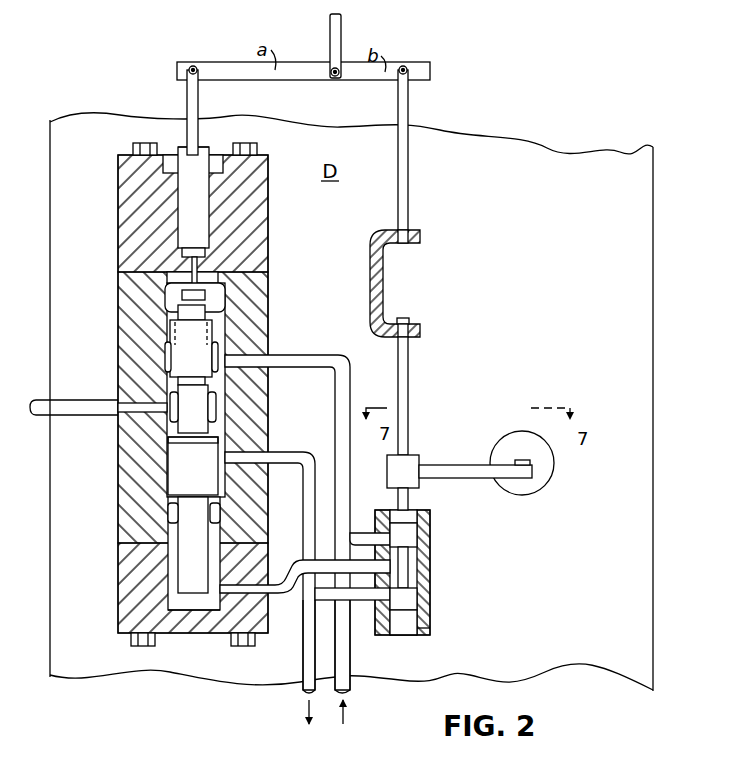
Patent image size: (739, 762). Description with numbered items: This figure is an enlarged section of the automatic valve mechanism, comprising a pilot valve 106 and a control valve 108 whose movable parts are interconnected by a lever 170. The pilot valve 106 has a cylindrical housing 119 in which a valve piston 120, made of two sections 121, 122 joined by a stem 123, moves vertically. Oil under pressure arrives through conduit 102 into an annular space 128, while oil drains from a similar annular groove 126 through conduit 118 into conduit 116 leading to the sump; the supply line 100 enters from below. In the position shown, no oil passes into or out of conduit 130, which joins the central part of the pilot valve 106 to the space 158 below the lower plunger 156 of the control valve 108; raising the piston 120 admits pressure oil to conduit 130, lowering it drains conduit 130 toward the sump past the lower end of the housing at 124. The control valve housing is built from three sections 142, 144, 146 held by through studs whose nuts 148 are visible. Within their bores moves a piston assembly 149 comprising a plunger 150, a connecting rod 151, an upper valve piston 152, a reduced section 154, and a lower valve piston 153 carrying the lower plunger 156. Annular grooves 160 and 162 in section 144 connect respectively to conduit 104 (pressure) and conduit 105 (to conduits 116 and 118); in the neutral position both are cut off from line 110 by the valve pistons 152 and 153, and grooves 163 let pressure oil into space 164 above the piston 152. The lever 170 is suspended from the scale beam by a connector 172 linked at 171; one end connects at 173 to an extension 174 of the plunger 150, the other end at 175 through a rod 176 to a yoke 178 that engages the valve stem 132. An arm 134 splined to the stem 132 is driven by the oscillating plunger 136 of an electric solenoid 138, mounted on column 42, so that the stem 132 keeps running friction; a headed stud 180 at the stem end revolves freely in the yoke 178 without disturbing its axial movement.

The column 42 is at (512, 233).
The inlet pipe 100 is at (349, 677).
The conduit 102 is at (358, 533).
The conduit 104 is at (310, 358).
The conduit 105 is at (296, 455).
The pilot valve 106 is at (433, 556).
The control valve 108 is at (116, 483).
The line 110 is at (80, 405).
The conduit 116 is at (305, 653).
The conduit 118 is at (363, 602).
The cylindrical housing 119 is at (420, 636).
The valve piston 120 is at (406, 511).
The section 121 is at (430, 520).
The section 122 is at (418, 624).
The stem 123 is at (408, 580).
The valve end plate 124 is at (431, 630).
The annular groove 126 is at (418, 604).
The annular space 128 is at (418, 535).
The conduit 130 is at (292, 577).
The valve stem 132 is at (408, 391).
The arm 134 is at (455, 467).
The oscillating plunger 136 is at (531, 466).
The electric solenoid 138 is at (507, 446).
The housing section 142 is at (131, 203).
The housing section 144 is at (132, 313).
The housing section 146 is at (130, 573).
The nuts 148 is at (133, 150).
The piston assembly 149 is at (177, 147).
The plunger 150 is at (181, 211).
The connecting rod 151 is at (197, 268).
The valve piston 152 is at (179, 360).
The valve piston 153 is at (178, 473).
The reduced section 154 is at (180, 413).
The lower plunger 156 is at (179, 556).
The space 158 is at (190, 600).
The annular groove 160 is at (166, 358).
The annular groove 162 is at (167, 444).
The grooves 163 is at (218, 334).
The space 164 is at (215, 298).
The lever 170 is at (396, 66).
The link point 171 is at (331, 69).
The connector 172 is at (340, 37).
The connection point 173 is at (193, 66).
The extension 174 is at (198, 104).
The connection point 175 is at (407, 77).
The rod 176 is at (408, 165).
The yoke 178 is at (383, 281).
The headed stud 180 is at (410, 323).